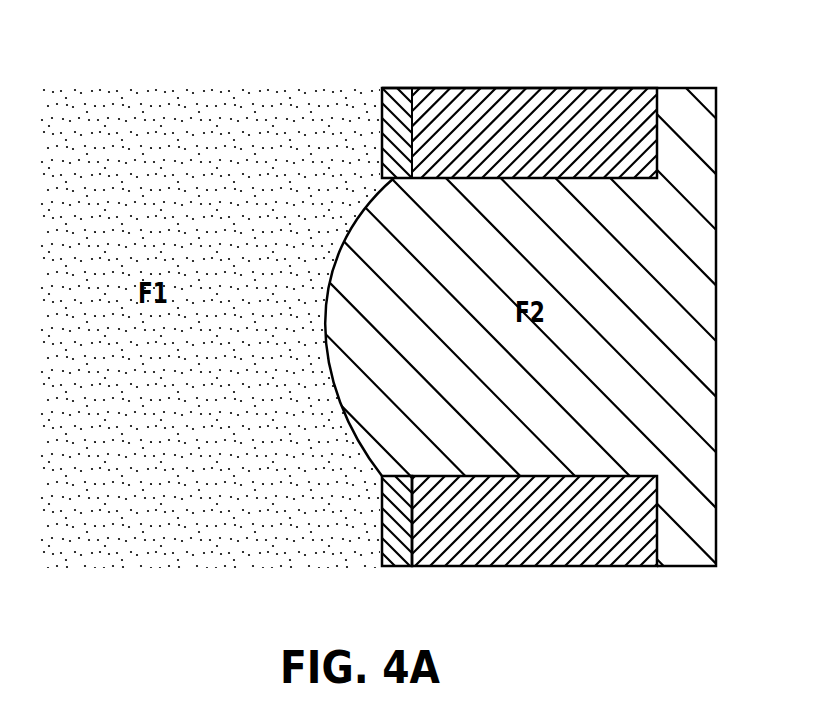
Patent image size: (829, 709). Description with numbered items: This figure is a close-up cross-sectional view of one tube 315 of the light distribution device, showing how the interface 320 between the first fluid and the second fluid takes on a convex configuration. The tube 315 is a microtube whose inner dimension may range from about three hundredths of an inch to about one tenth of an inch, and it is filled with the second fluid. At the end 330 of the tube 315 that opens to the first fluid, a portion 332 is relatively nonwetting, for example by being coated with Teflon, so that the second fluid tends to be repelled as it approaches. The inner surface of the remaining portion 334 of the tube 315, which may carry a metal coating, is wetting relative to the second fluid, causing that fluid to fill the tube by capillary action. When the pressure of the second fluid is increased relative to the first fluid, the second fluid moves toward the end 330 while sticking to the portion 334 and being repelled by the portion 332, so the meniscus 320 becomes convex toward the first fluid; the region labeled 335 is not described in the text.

The tube 315 is at (513, 88).
The interface 320 is at (350, 418).
The end of the tube 330 is at (381, 138).
The portion of the end 332 is at (402, 529).
The remaining portion 334 is at (538, 533).
The side wall 335 is at (657, 133).